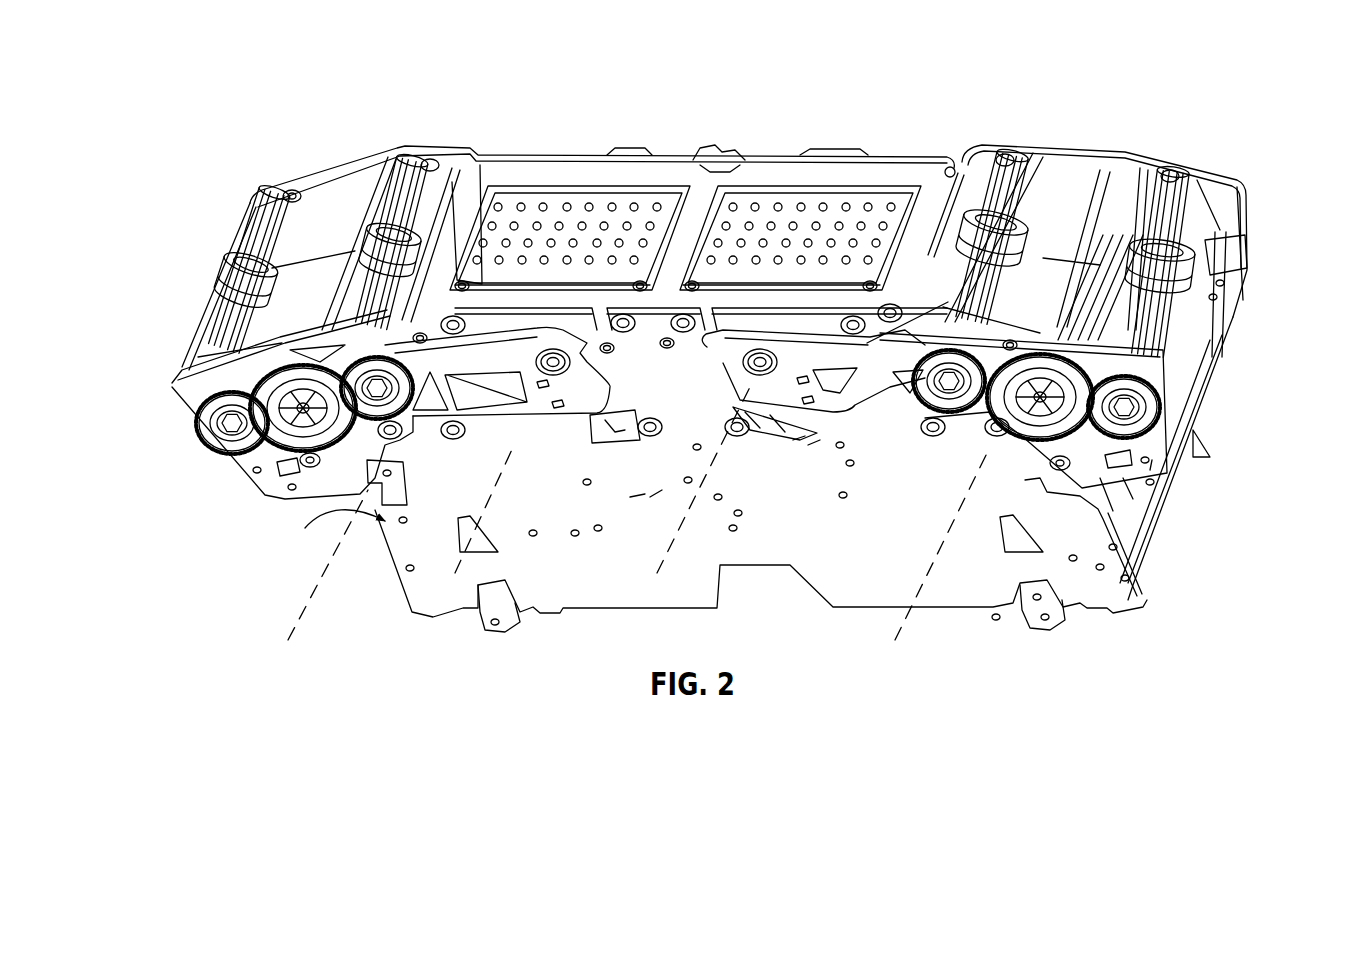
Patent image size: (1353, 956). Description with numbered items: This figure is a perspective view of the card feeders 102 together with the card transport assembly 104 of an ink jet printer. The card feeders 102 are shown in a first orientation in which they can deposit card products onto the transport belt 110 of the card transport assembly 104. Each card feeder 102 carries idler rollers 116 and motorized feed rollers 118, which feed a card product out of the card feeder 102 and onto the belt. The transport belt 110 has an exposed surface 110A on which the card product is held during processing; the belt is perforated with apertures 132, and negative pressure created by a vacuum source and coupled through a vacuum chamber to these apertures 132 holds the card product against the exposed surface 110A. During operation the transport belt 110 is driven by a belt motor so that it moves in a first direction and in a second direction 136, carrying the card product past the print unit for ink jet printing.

The card feeder 102 is at (230, 474).
The card transport assembly 104 is at (737, 78).
The transport belt 110 is at (685, 164).
The exposed surface 110A is at (578, 203).
The idler rollers 116 is at (380, 250).
The motorized feed rollers 118 is at (383, 228).
The apertures 132 is at (520, 203).
The second direction 136 is at (185, 436).